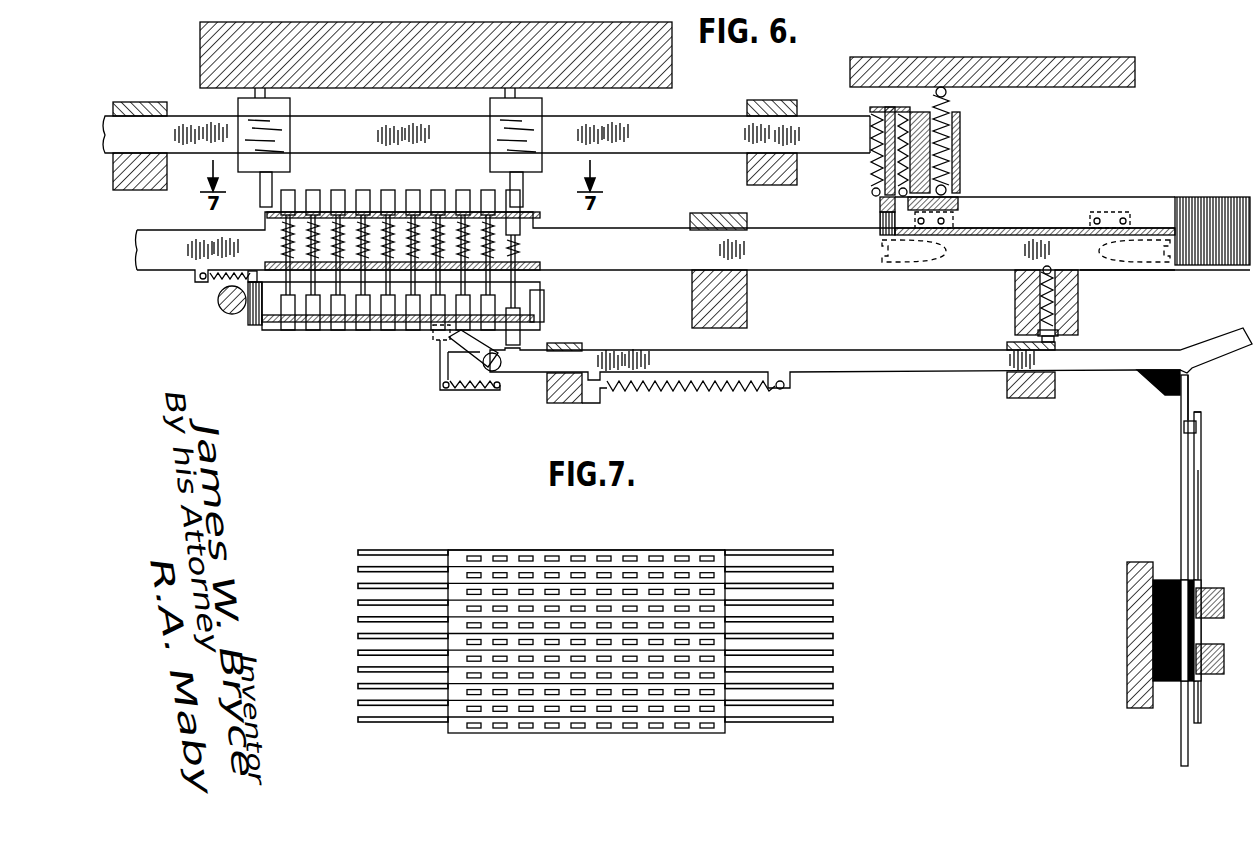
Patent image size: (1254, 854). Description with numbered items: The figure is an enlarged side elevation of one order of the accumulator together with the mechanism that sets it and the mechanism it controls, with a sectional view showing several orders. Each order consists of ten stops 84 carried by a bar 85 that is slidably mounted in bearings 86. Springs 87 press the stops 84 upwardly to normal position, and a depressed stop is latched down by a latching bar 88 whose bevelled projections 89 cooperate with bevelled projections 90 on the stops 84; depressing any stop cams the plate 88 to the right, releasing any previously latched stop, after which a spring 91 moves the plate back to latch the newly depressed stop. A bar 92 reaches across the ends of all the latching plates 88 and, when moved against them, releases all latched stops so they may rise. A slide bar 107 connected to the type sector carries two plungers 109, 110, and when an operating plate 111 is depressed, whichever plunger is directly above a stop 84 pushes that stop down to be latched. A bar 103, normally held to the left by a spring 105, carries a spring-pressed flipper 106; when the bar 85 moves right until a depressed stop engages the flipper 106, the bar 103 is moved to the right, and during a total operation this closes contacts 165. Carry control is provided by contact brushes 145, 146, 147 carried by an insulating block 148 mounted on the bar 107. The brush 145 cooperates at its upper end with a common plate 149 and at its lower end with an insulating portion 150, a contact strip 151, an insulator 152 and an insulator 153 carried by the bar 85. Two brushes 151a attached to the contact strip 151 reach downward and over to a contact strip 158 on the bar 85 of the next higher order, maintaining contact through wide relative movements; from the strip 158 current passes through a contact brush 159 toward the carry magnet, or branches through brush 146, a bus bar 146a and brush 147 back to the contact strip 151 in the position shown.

In FIG. 6, the stop 84 is at (357, 205).
In FIG. 7, the stop 84 is at (545, 556).
In FIG. 6, the bar 85 is at (653, 232).
In FIG. 7, the bar 85 is at (358, 638).
In FIG. 6, the bearings 86 is at (741, 318).
In FIG. 6, the spring 87 is at (286, 242).
In FIG. 6, the latching bar 88 is at (538, 314).
In FIG. 6, the projections 89 is at (540, 278).
In FIG. 6, the projections 90 is at (536, 296).
In FIG. 6, the spring 91 is at (228, 280).
In FIG. 6, the bar 92 is at (231, 311).
In FIG. 6, the bar 103 is at (816, 368).
In FIG. 6, the spring 105 is at (699, 389).
In FIG. 6, the flipper 106 is at (462, 350).
In FIG. 6, the slide bar 107 is at (670, 120).
In FIG. 6, the plunger 109 is at (275, 192).
In FIG. 6, the plunger 110 is at (525, 190).
In FIG. 6, the operating plate 111 is at (240, 57).
In FIG. 6, the contact brush 145 is at (952, 102).
In FIG. 6, the contact brush 146 is at (871, 192).
In FIG. 6, the bus bar 146a is at (882, 108).
In FIG. 6, the contact brush 147 is at (880, 212).
In FIG. 6, the insulating block 148 is at (961, 156).
In FIG. 6, the common plate 149 is at (1137, 75).
In FIG. 6, the insulating portion 150 is at (1217, 185).
In FIG. 6, the contact strip 151 is at (1046, 196).
In FIG. 6, the brush 151a is at (915, 264).
In FIG. 6, the insulator 152 is at (959, 196).
In FIG. 6, the insulator 153 is at (883, 218).
In FIG. 6, the contact strip 158 is at (1084, 262).
In FIG. 6, the contact brush 159 is at (1043, 268).
In FIG. 6, the contacts 165 is at (1193, 423).